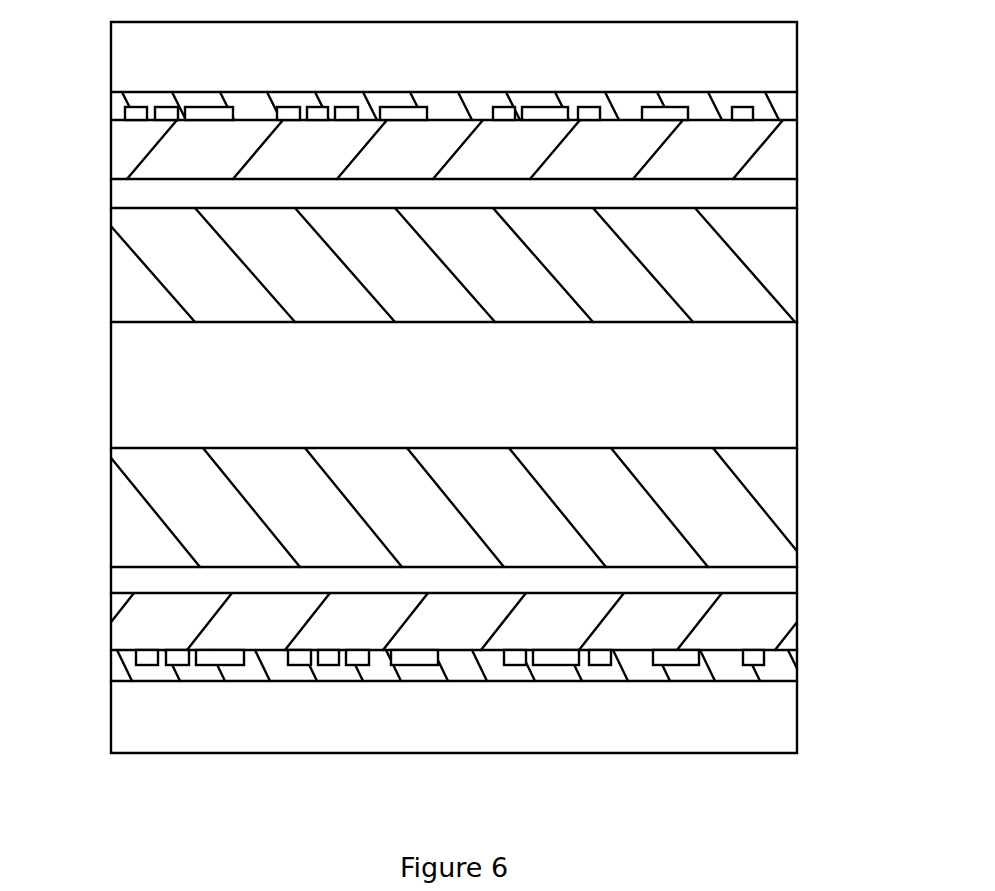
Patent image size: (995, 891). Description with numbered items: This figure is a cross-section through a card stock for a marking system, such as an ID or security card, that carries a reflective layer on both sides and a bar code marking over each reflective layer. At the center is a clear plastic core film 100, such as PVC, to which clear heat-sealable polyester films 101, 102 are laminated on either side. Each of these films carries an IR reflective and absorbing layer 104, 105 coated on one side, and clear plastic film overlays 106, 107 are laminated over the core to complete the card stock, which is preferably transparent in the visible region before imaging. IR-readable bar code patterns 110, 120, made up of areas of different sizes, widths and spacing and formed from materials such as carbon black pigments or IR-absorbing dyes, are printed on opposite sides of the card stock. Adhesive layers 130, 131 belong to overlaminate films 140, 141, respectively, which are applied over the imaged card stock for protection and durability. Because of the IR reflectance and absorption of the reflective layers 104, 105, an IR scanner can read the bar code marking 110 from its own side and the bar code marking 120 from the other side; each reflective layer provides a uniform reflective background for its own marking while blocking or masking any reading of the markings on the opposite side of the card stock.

The core film 100 is at (780, 386).
The heat-sealable plastic film 101 is at (780, 257).
The heat-sealable plastic film 102 is at (780, 515).
The IR reflective and absorbing layer 104 is at (780, 193).
The IR reflective and absorbing layer 105 is at (780, 581).
The film overlay 106 is at (780, 148).
The film overlay 107 is at (780, 621).
The bar code pattern 110 is at (202, 110).
The bar code pattern 120 is at (148, 660).
The adhesive layer 130 is at (780, 107).
The adhesive layer 131 is at (780, 667).
The overlaminate film 140 is at (790, 78).
The overlaminate film 141 is at (780, 710).